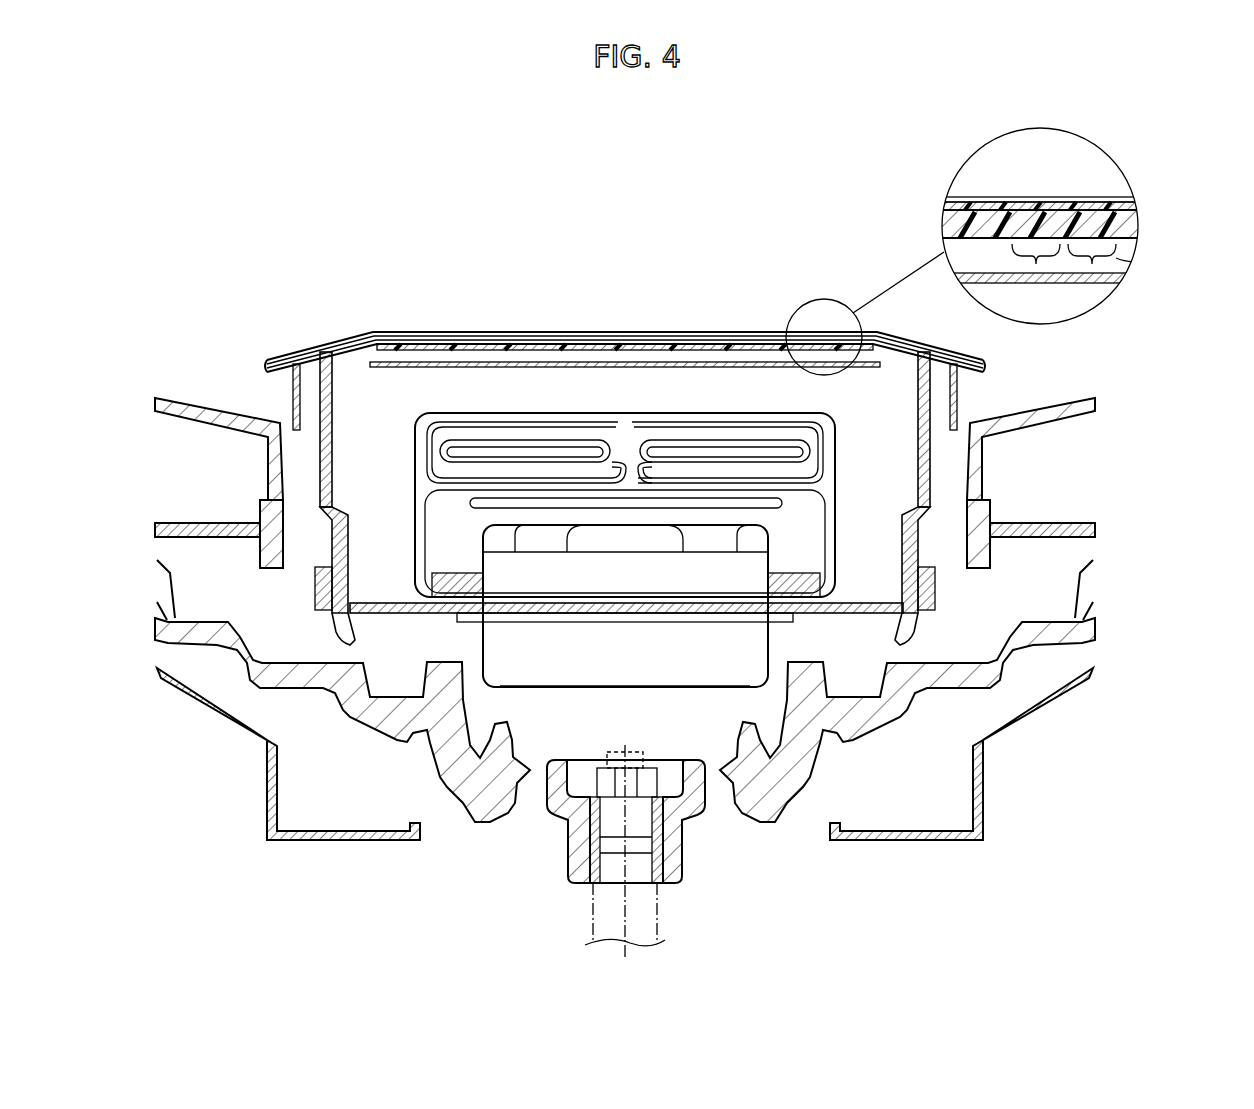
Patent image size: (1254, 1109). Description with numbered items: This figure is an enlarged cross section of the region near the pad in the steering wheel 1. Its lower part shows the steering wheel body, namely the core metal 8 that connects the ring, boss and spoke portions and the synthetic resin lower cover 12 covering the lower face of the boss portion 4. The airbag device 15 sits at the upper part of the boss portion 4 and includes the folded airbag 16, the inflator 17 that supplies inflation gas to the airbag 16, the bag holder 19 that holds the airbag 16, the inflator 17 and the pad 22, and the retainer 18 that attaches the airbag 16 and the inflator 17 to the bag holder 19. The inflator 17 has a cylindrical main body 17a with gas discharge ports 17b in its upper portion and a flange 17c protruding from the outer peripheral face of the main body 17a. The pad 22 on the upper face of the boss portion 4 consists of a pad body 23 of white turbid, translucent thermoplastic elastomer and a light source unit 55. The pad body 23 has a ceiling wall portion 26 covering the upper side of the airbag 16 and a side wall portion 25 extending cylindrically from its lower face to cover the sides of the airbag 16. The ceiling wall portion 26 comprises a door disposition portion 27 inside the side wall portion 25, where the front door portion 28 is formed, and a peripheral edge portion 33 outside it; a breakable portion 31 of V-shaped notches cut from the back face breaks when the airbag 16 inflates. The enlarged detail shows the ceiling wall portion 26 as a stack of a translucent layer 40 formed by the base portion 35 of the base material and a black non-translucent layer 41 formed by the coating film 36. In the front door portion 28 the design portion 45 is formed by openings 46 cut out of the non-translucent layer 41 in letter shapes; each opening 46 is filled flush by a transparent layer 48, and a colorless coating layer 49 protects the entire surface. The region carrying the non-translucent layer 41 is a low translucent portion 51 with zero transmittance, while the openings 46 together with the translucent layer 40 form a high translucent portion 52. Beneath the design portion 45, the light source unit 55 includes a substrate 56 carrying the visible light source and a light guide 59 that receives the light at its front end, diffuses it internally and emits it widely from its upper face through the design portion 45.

The steering wheel 1 is at (975, 860).
The boss portion 4 is at (703, 860).
The core metal 8 is at (988, 670).
The lower cover 12 is at (350, 848).
The airbag device 15 is at (1047, 358).
The airbag 16 is at (424, 447).
The inflator 17 is at (625, 642).
The main body 17a is at (570, 678).
The gas discharge ports 17b is at (748, 548).
The flange 17c is at (625, 617).
The retainer 18 is at (797, 562).
The bag holder 19 is at (850, 615).
The pad 22 is at (395, 216).
The pad body 23 is at (625, 295).
The side wall portion 25 is at (330, 527).
The ceiling wall portion 26 is at (268, 355).
The door disposition portion 27 is at (625, 295).
The front door portion 28 is at (430, 337).
The breakable portion 31 is at (338, 352).
The peripheral edge portion 33 is at (975, 380).
The base portion 35 is at (961, 214).
The translucent layer 40 is at (944, 228).
The coating film 36 is at (1097, 218).
The non-translucent layer 41 is at (1130, 220).
The design portion 45 is at (1030, 196).
The opening 46 is at (995, 161).
The transparent layer 48 is at (1060, 204).
The coating layer 49 is at (1100, 206).
The low translucent portion 51 is at (1120, 276).
The high translucent portion 52 is at (1030, 246).
The light source unit 55 is at (625, 295).
The substrate 56 is at (480, 362).
The light guide 59 is at (635, 358).